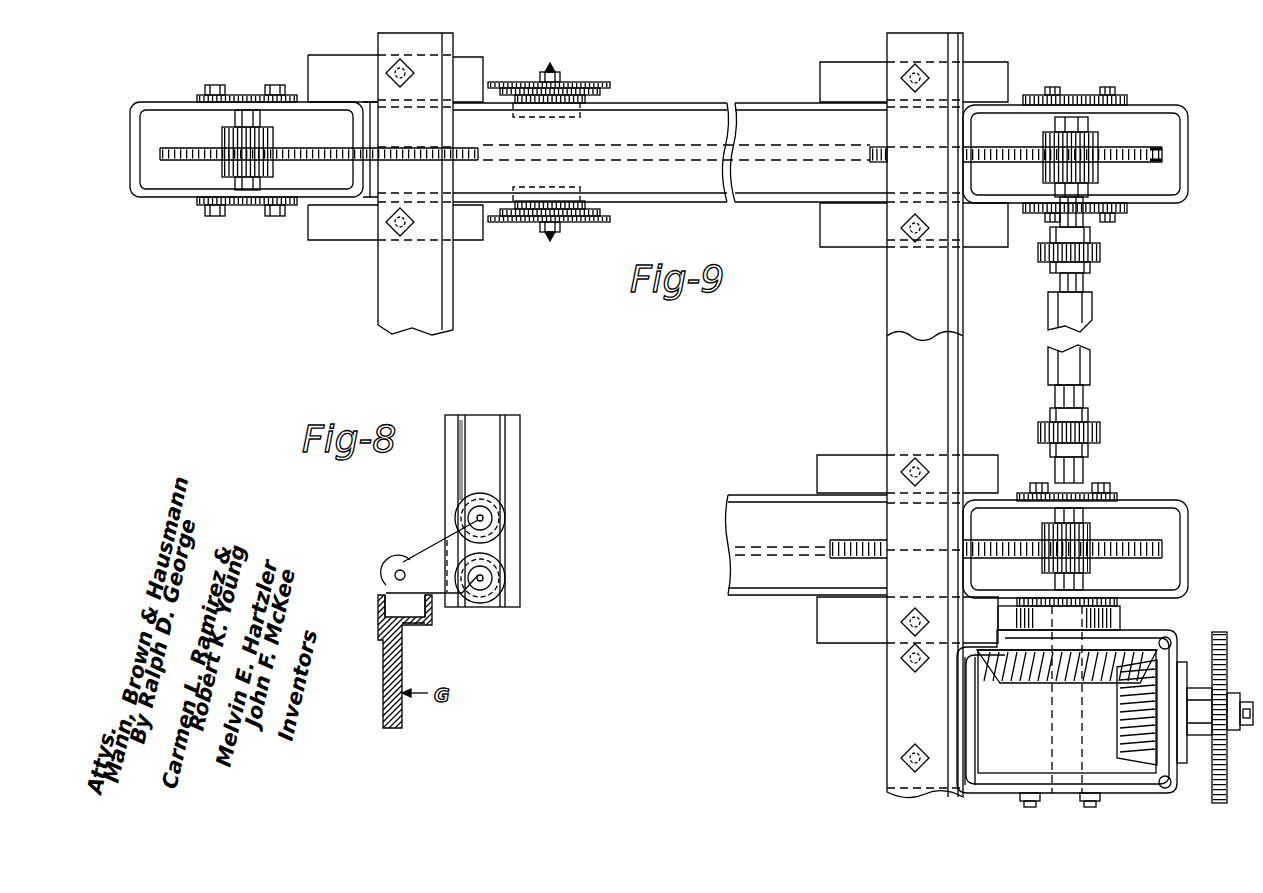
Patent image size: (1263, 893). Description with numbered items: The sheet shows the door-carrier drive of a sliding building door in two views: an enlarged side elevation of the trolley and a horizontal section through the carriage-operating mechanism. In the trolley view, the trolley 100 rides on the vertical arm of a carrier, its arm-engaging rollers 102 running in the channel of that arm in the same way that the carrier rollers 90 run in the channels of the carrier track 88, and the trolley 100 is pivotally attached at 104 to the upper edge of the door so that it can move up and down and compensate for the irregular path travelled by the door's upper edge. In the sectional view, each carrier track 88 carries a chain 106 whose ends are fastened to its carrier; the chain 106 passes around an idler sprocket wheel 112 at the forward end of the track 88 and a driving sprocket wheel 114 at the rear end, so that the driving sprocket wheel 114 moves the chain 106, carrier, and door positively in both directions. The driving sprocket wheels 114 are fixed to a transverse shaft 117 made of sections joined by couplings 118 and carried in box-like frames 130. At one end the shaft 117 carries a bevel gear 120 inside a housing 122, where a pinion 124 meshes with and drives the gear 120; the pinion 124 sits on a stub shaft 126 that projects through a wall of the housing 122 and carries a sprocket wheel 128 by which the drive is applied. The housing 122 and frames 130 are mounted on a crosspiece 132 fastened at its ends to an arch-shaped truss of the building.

In FIG. 9, the carrier track 88 is at (742, 103).
In FIG. 9, the carrier rollers 90 is at (598, 88).
In FIG. 8, the trolley 100 is at (430, 552).
In FIG. 8, the arm-engaging rollers 102 is at (506, 566).
In FIG. 8, the pivotal attachment 104 is at (393, 578).
In FIG. 9, the chain 106 is at (164, 150).
In FIG. 9, the idler sprocket wheel 112 is at (184, 143).
In FIG. 9, the driving sprocket wheel 114 is at (1140, 133).
In FIG. 9, the transverse shaft 117 is at (1090, 366).
In FIG. 9, the couplings 118 is at (1100, 252).
In FIG. 9, the bevel gear 120 is at (1108, 665).
In FIG. 9, the housing 122 is at (977, 707).
In FIG. 9, the pinion 124 is at (1132, 750).
In FIG. 9, the stub shaft 126 is at (1242, 704).
In FIG. 9, the sprocket wheel 128 is at (1228, 738).
In FIG. 9, the box-like frames 130 is at (1188, 172).
In FIG. 9, the crosspiece 132 is at (898, 352).